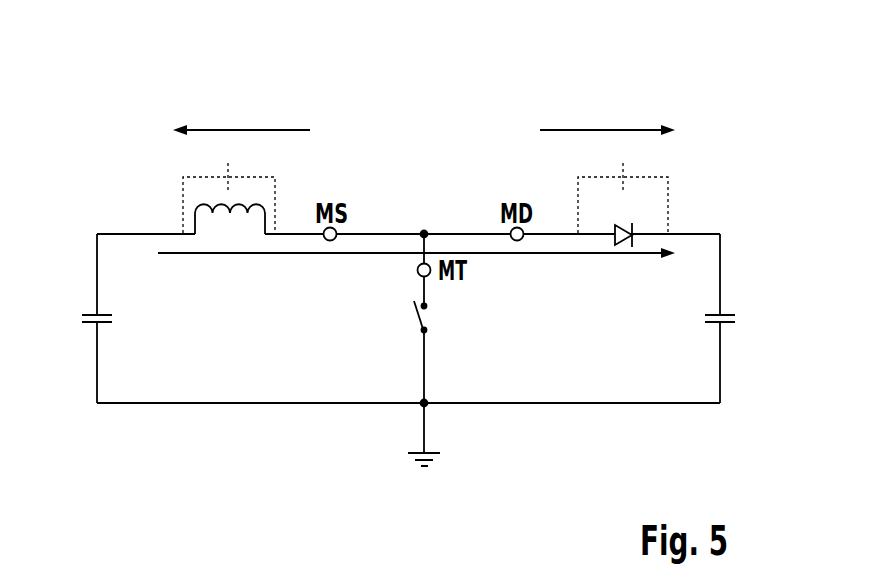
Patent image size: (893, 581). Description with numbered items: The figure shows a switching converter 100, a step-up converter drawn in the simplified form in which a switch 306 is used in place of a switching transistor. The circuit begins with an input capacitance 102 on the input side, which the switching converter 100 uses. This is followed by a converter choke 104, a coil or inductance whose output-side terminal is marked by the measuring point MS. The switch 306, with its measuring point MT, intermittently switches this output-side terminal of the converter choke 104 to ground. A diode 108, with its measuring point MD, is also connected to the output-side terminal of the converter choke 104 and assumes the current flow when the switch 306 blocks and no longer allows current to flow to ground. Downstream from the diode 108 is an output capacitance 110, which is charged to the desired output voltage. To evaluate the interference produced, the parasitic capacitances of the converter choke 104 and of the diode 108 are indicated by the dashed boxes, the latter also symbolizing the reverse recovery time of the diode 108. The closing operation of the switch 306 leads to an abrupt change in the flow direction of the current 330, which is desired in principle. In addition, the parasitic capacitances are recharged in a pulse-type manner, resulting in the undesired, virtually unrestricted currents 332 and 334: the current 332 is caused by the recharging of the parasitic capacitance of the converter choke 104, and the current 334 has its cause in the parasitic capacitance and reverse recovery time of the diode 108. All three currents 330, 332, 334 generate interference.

The switching converter 100 is at (700, 90).
The input capacitance 102 is at (90, 313).
The converter choke 104 is at (212, 207).
The diode 108 is at (621, 228).
The output capacitance 110 is at (725, 313).
The switch 306 is at (418, 312).
The current 330 is at (552, 254).
The current 332 is at (240, 128).
The current 334 is at (607, 128).